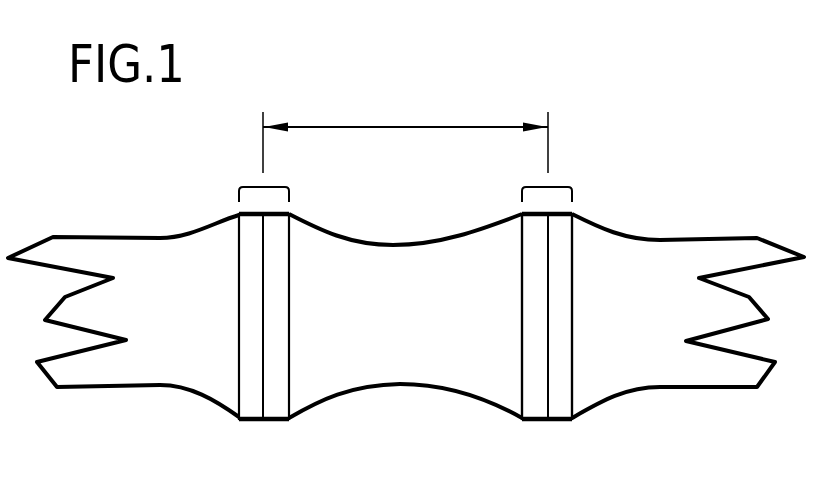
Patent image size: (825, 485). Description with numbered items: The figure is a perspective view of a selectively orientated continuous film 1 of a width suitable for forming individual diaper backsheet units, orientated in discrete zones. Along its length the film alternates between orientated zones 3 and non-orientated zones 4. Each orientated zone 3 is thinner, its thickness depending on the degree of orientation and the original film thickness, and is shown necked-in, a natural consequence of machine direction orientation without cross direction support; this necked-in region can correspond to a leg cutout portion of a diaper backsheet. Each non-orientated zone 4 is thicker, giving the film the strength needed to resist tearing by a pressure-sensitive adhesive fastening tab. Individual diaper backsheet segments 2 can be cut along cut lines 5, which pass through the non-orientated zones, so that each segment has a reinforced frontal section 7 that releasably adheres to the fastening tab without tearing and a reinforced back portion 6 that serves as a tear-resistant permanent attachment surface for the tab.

The selectively orientated continuous film 1 is at (388, 205).
The individual diaper backsheet segment 2 is at (355, 125).
The orientated zone 3 is at (420, 243).
The non-orientated zone 4 is at (248, 188).
The cut line 5 is at (265, 407).
The reinforced back portion 6 is at (530, 407).
The reinforced frontal section 7 is at (562, 286).